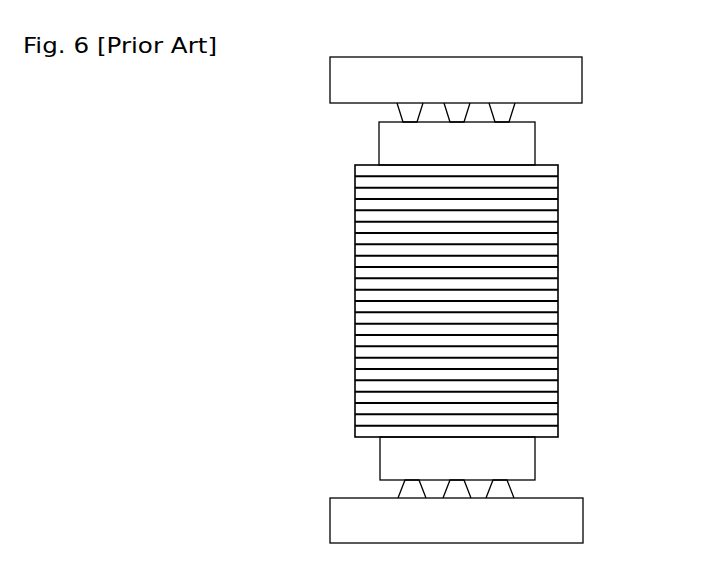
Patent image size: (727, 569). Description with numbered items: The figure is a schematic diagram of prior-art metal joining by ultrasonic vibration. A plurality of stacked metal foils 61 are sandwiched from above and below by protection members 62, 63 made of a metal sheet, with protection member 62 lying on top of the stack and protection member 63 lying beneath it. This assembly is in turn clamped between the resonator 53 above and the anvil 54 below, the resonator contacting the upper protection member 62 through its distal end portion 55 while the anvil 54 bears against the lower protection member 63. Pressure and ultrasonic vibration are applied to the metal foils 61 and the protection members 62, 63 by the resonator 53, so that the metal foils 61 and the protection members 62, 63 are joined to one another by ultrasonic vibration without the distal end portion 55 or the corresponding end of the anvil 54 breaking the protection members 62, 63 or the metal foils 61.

The resonator 53 is at (582, 70).
The anvil 54 is at (570, 528).
The distal end portion of the resonator 55 is at (505, 115).
The metal foils 61 is at (572, 165).
The protection member 62 is at (535, 143).
The protection member 63 is at (527, 457).